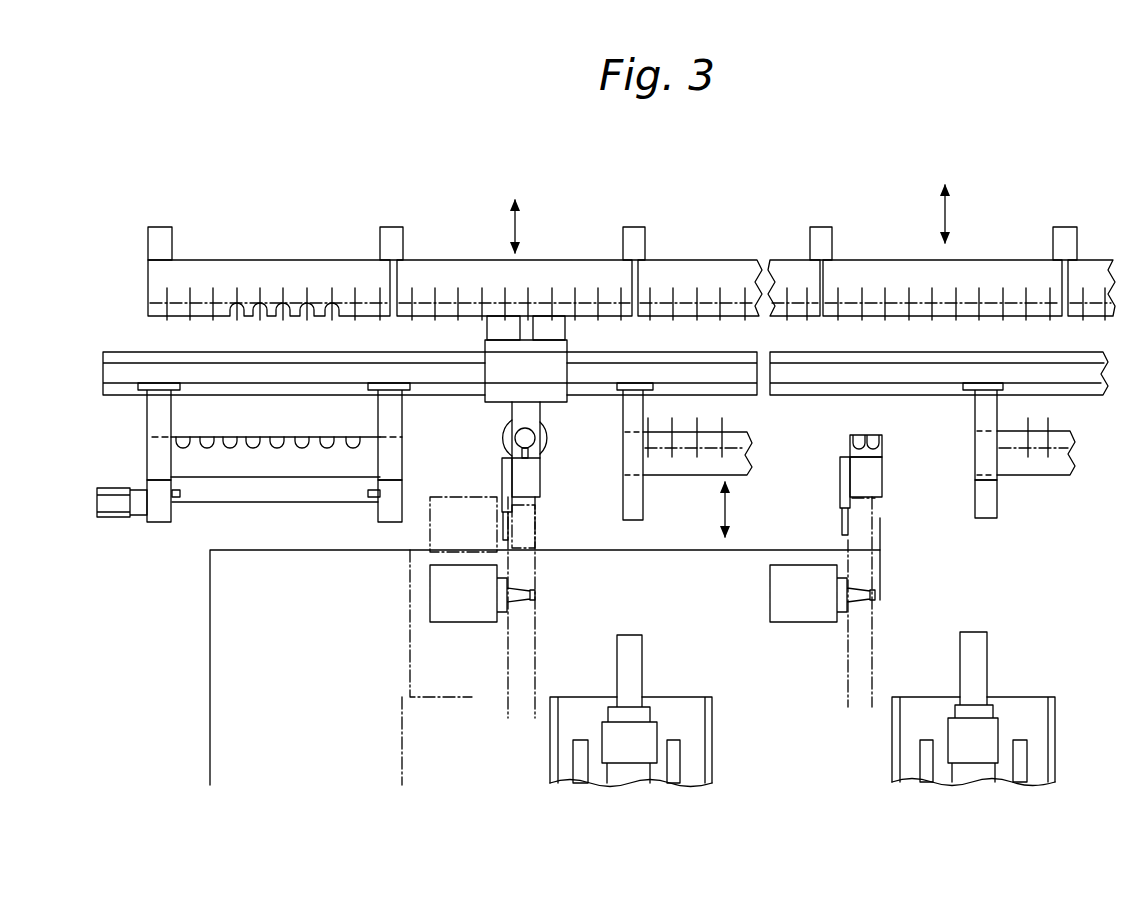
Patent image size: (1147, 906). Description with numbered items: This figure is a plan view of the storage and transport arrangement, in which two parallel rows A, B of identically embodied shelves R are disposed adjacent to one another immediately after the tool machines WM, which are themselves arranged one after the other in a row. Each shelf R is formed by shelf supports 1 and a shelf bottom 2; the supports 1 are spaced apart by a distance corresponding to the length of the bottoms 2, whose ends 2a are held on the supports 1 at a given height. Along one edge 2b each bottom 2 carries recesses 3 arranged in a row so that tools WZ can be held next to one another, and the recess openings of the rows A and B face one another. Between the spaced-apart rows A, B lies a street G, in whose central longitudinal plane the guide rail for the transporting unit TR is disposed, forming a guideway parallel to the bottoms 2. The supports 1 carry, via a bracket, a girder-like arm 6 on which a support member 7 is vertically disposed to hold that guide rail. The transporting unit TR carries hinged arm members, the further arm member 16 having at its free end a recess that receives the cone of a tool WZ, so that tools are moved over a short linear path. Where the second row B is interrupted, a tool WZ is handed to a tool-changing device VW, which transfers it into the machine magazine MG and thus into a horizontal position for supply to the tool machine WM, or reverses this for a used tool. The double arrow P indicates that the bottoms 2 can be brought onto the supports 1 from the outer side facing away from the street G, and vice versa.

The shelf supports 1 is at (158, 242).
The bottoms of the shelves 2 is at (316, 268).
The ends of the bottoms 2a is at (403, 278).
The edge of the shelf bottom 2b is at (452, 317).
The recesses 3 is at (332, 318).
The girder-like arm 6 is at (157, 410).
The support member 7 is at (138, 365).
The further arm member 16 is at (533, 418).
The row of shelves A is at (147, 294).
The second row of shelves B is at (147, 447).
The street G is at (218, 336).
The shelves R is at (276, 268).
The double arrow P is at (523, 222).
The transporting unit TR is at (500, 412).
The tool WZ is at (552, 438).
The tool-changing device VW is at (493, 482).
The machine magazine MG is at (517, 668).
The tool machines WM is at (683, 713).